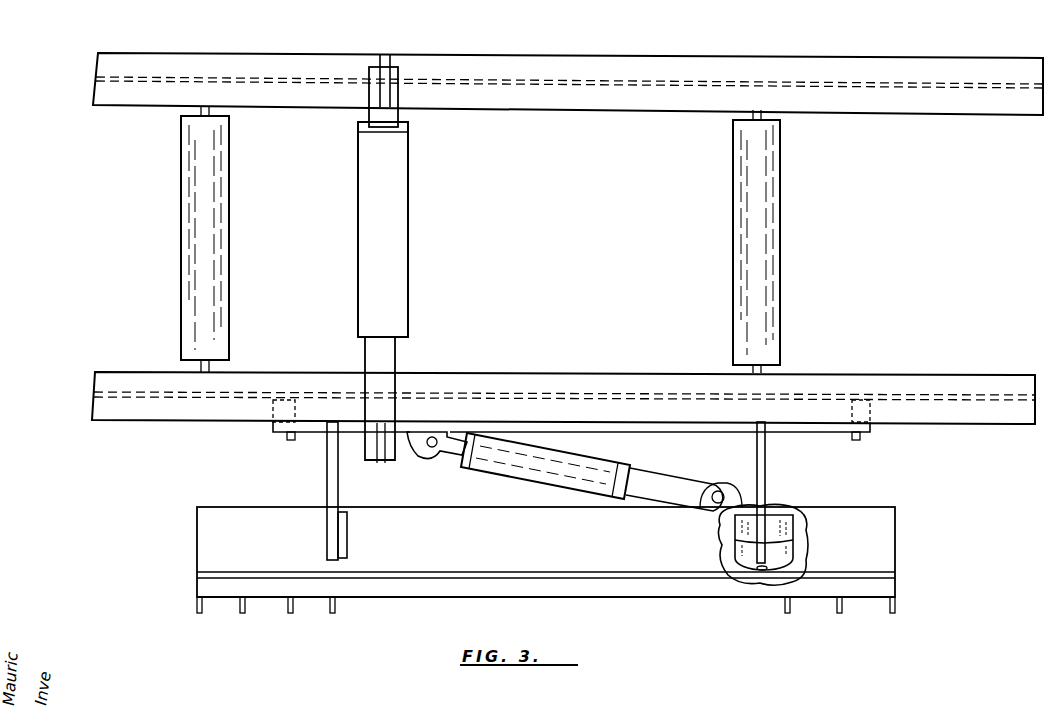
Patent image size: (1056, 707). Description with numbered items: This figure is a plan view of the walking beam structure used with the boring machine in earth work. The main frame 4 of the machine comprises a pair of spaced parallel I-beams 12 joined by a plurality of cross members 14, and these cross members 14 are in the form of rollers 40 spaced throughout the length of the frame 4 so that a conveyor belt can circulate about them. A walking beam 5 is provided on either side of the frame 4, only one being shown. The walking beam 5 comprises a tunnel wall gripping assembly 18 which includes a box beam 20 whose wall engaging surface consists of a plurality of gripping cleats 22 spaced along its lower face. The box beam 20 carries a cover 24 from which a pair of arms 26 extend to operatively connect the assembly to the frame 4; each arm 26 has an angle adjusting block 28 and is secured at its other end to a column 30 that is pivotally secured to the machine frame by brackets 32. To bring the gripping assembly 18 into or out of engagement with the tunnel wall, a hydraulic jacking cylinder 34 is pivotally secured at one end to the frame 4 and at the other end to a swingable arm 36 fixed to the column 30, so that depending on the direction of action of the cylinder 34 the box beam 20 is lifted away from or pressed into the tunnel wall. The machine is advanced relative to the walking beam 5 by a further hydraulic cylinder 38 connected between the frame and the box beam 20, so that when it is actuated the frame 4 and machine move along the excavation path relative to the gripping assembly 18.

The main frame 4 is at (977, 48).
The walking beam 5 is at (925, 495).
The I-beam 12 is at (862, 108).
The cross member 14 is at (497, 239).
The tunnel wall gripping assembly 18 is at (576, 573).
The box beam 20 is at (640, 590).
The gripping cleat 22 is at (336, 606).
The cover 24 is at (545, 565).
The arm 26 is at (339, 499).
The angle adjusting block 28 is at (348, 541).
The column 30 is at (318, 432).
The bracket 32 is at (287, 437).
The hydraulic cylinder 34 is at (404, 257).
The swingable arm 36 is at (386, 461).
The hydraulic cylinder 38 is at (621, 467).
The roller 40 is at (228, 240).